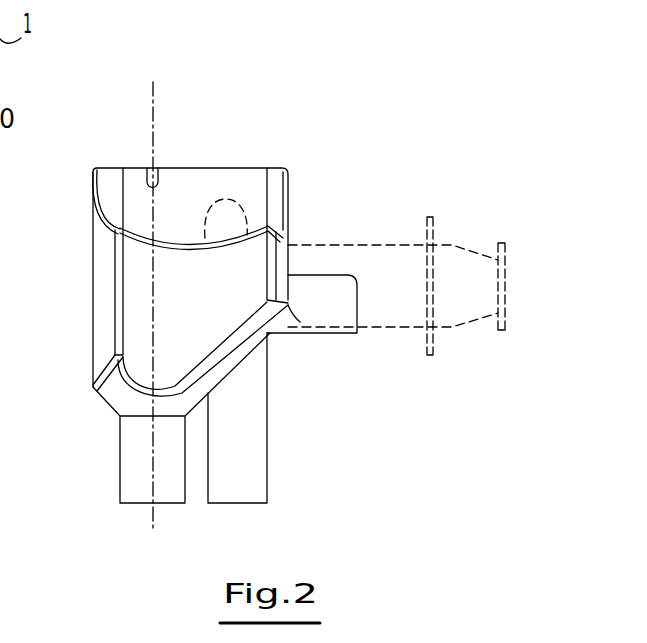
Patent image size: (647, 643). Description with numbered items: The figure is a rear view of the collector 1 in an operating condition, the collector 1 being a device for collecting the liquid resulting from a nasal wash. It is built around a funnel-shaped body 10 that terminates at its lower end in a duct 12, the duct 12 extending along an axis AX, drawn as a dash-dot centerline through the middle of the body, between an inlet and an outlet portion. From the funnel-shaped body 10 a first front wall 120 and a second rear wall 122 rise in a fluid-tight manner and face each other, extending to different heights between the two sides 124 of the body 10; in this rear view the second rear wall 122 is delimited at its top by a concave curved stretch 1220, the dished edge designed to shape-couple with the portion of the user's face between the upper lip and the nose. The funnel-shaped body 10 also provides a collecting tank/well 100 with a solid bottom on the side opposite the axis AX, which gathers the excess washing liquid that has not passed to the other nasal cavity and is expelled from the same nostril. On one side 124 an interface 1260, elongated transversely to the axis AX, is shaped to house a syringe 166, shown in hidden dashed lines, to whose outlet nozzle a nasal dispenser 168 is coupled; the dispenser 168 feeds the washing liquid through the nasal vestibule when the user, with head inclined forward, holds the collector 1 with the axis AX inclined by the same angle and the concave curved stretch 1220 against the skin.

The collector 1 is at (438, 103).
The axis AX is at (153, 87).
The funnel-shaped body 10 is at (122, 391).
The duct 12 is at (143, 461).
The collecting tank/well 100 is at (248, 469).
The first front wall 120 is at (137, 208).
The concave curved stretch 1220 is at (220, 132).
The second rear wall 122 is at (147, 267).
The side 124 is at (290, 288).
The interface 1260 is at (327, 303).
The syringe 166 is at (402, 295).
The nasal dispenser 168 is at (245, 204).